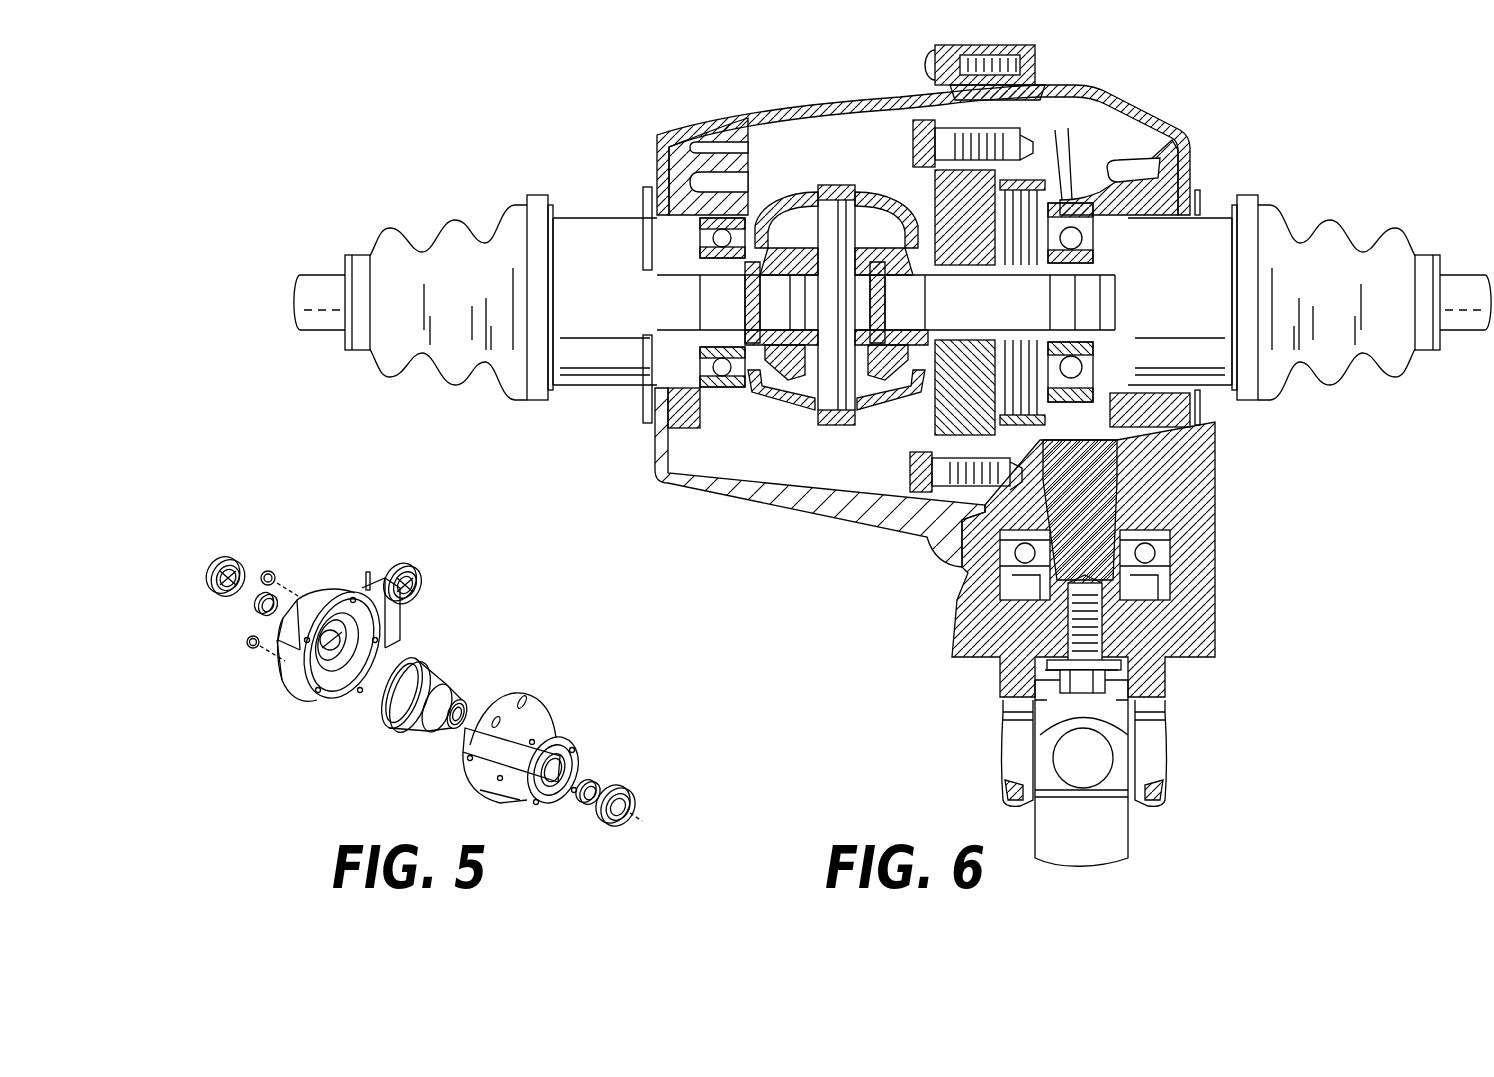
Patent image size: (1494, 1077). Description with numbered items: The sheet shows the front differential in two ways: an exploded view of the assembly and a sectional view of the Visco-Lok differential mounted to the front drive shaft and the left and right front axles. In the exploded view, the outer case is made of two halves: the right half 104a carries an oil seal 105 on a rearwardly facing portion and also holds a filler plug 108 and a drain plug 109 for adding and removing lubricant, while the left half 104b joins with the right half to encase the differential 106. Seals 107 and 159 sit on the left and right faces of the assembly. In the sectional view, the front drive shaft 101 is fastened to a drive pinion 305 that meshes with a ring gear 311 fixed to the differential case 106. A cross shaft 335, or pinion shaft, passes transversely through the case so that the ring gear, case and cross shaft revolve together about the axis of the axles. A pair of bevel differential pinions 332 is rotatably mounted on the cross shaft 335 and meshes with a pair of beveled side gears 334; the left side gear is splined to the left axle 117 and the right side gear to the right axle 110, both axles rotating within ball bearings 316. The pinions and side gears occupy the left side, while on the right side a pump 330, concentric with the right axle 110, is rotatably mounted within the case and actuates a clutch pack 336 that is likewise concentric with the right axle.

In FIG. 6, the front drive shaft 101 is at (1112, 828).
In FIG. 5, the right half 104a is at (307, 695).
In FIG. 5, the left half 104b is at (543, 727).
In FIG. 5, the oil seal 105 is at (427, 587).
In FIG. 5, the differential 106 is at (433, 690).
In FIG. 5, the seal 107 is at (212, 585).
In FIG. 5, the filler plug 108 is at (283, 574).
In FIG. 5, the drain plug 109 is at (254, 652).
In FIG. 6, the right axle 110 is at (1455, 285).
In FIG. 6, the left axle 117 is at (322, 288).
In FIG. 5, the seal 159 is at (256, 610).
In FIG. 6, the drive pinion 305 is at (1098, 497).
In FIG. 6, the ring gear 311 is at (931, 552).
In FIG. 6, the ball bearings 316 is at (718, 373).
In FIG. 6, the pump 330 is at (1042, 404).
In FIG. 6, the differential pinions 332 is at (800, 385).
In FIG. 6, the side gears 334 is at (785, 345).
In FIG. 6, the cross shaft 335 is at (833, 424).
In FIG. 6, the clutch pack 336 is at (886, 410).